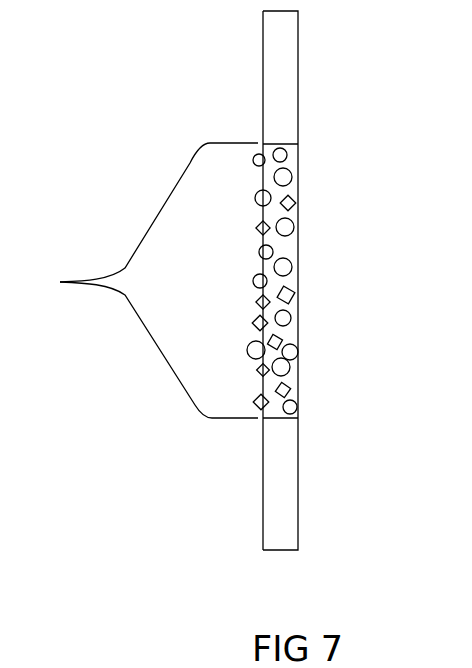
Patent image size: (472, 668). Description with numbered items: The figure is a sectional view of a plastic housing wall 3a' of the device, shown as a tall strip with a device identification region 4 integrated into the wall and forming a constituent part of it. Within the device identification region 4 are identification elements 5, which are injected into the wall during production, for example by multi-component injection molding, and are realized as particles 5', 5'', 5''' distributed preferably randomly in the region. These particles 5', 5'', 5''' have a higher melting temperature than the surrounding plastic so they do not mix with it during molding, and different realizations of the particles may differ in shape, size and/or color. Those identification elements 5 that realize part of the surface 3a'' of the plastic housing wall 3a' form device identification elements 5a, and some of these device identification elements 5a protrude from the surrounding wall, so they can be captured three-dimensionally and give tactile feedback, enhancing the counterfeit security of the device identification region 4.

The plastic housing wall 3a' is at (250, 279).
The surface of the plastic housing wall 3a'' is at (224, 280).
The device identification region 4 is at (169, 280).
The identification elements 5 is at (281, 281).
The particles 5' is at (323, 319).
The particles 5'' is at (337, 182).
The particles 5''' is at (334, 248).
The device identification elements 5a is at (262, 252).